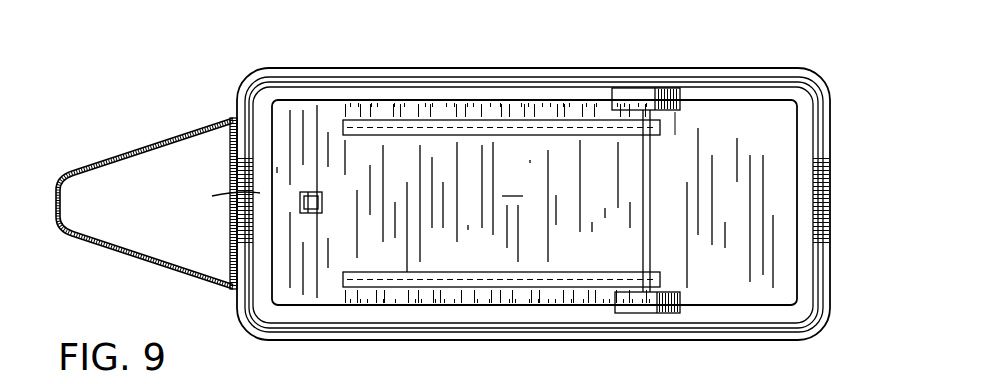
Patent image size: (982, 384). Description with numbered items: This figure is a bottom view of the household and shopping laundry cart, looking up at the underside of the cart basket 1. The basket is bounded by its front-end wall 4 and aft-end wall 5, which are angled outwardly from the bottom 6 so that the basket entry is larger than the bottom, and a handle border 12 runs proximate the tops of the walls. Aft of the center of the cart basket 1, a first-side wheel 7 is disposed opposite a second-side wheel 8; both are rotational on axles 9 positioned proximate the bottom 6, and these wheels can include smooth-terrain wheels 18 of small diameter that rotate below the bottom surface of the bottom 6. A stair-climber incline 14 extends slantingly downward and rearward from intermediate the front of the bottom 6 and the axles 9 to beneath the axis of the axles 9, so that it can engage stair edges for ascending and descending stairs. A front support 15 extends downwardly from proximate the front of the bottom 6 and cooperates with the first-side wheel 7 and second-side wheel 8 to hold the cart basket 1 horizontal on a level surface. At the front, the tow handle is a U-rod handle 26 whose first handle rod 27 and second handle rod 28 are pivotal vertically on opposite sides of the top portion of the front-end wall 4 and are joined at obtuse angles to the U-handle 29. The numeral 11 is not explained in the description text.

The cart basket 1 is at (852, 181).
The front-end wall 4 is at (260, 205).
The aft-end wall 5 is at (803, 218).
The bottom 6 is at (534, 202).
The first-side wheel 7 is at (673, 109).
The second-side wheel 8 is at (680, 313).
The axles 9 is at (642, 190).
The hinge 11 is at (232, 178).
The handle border 12 is at (452, 325).
The stair-climber incline 14 is at (410, 128).
The front support 15 is at (305, 213).
The smooth-terrain wheels 18 is at (645, 84).
The U-rod handle 26 is at (172, 116).
The first handle rod 27 is at (137, 260).
The second handle rod 28 is at (137, 147).
The U-handle 29 is at (61, 202).